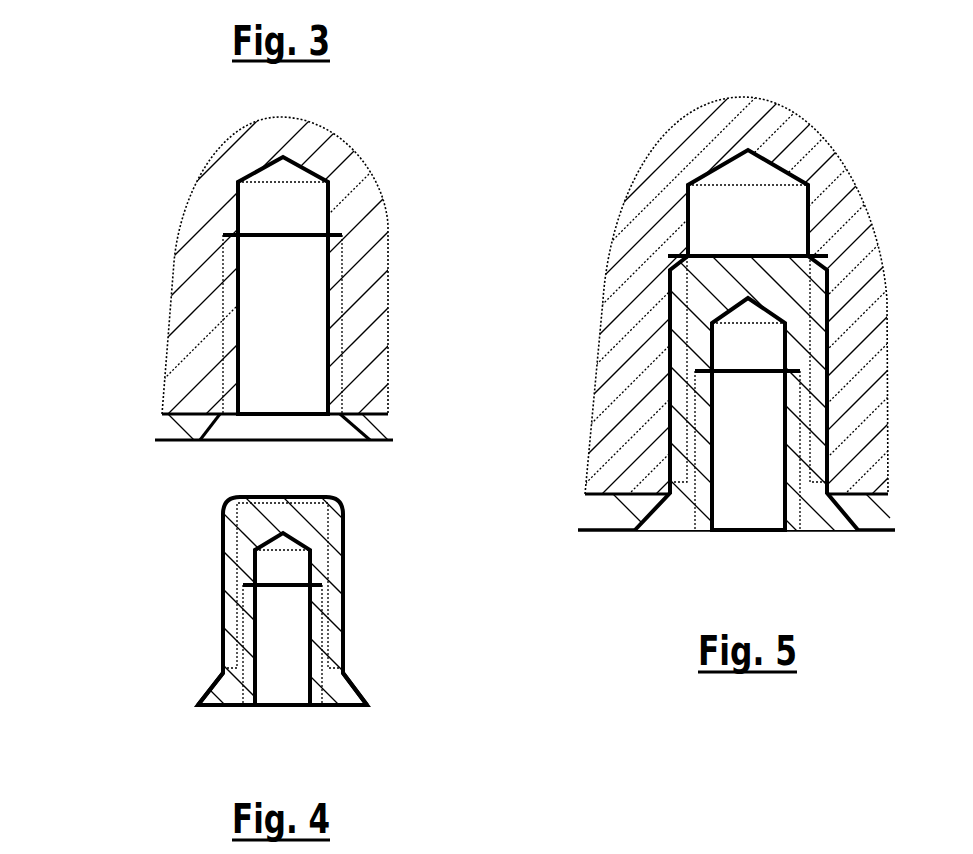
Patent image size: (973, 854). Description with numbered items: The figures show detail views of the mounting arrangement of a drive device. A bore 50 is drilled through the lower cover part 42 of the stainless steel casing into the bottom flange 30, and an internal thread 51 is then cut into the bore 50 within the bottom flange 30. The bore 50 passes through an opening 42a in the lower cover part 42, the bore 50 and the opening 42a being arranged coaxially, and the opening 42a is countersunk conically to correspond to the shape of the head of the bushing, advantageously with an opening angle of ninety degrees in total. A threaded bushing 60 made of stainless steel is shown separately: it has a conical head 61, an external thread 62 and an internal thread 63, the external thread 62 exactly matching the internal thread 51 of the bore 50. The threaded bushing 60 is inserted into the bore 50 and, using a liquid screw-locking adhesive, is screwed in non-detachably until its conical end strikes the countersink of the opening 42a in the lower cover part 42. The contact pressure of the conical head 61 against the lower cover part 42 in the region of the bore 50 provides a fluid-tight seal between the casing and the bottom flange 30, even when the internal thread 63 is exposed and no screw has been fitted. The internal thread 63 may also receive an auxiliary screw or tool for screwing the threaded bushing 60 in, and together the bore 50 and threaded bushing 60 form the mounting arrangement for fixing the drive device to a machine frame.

In FIG. 3, the bottom flange 30 is at (188, 260).
In FIG. 5, the bottom flange 30 is at (868, 262).
In FIG. 3, the bore 50 is at (353, 300).
In FIG. 5, the bore 50 is at (697, 213).
In FIG. 3, the internal thread 51 is at (232, 262).
In FIG. 3, the lower cover part 42 is at (170, 445).
In FIG. 5, the lower cover part 42 is at (612, 513).
In FIG. 3, the opening 42a is at (220, 442).
In FIG. 4, the threaded bushing 60 is at (277, 620).
In FIG. 5, the threaded bushing 60 is at (830, 380).
In FIG. 4, the conical head 61 is at (362, 693).
In FIG. 4, the external thread 62 is at (345, 541).
In FIG. 4, the internal thread 63 is at (308, 688).